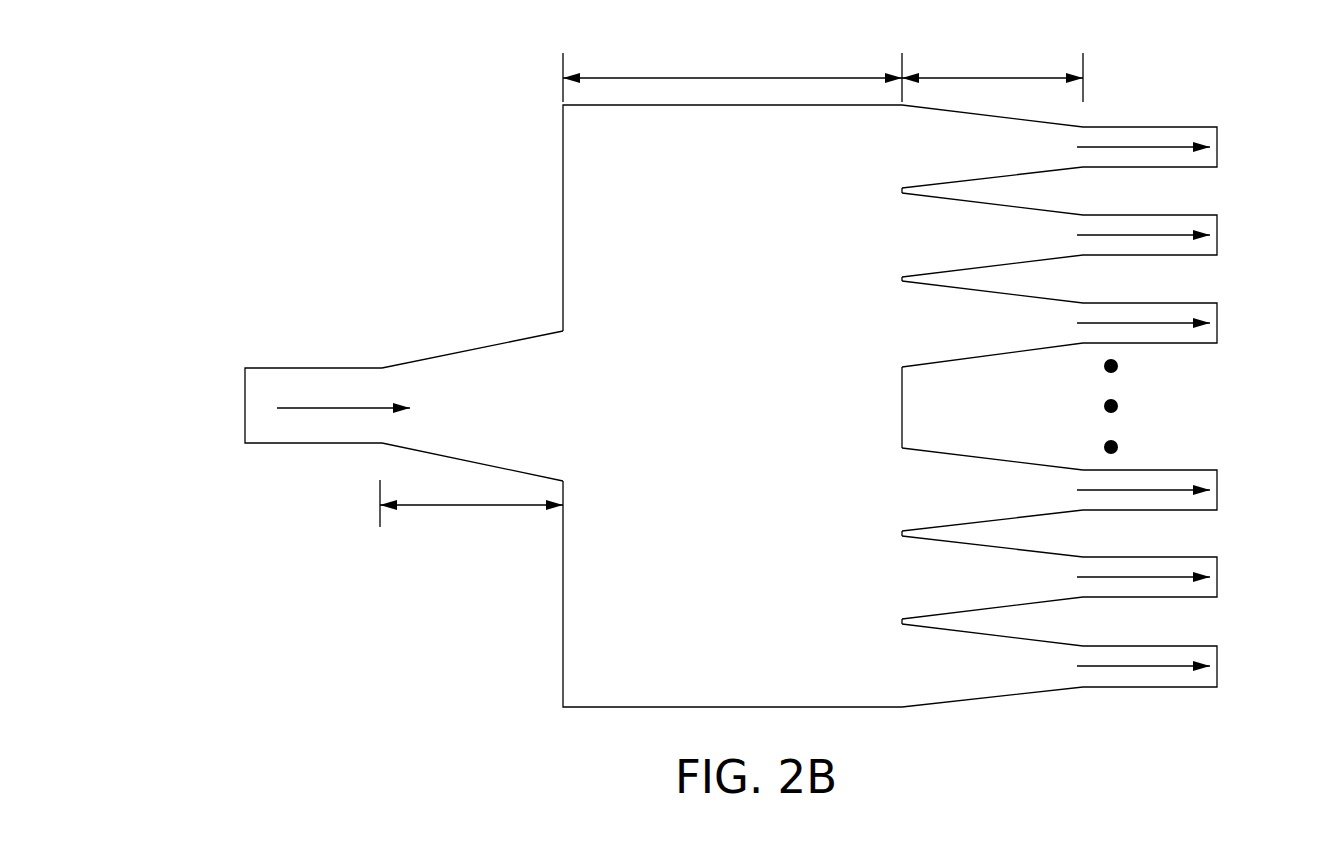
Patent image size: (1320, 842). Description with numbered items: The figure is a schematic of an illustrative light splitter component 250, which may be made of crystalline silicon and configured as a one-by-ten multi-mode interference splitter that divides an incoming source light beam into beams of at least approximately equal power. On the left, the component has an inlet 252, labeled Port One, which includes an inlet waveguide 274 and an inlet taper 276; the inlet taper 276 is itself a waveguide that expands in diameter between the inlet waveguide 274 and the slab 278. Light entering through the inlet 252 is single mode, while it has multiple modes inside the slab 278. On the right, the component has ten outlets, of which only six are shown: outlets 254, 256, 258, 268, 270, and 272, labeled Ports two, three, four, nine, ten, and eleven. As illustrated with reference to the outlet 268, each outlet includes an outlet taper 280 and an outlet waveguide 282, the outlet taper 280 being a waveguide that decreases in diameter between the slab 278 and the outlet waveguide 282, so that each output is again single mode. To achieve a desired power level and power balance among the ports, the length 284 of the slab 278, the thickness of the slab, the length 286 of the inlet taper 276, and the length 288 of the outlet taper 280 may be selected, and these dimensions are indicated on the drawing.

The light splitter component 250 is at (212, 95).
The inlet 252 is at (213, 433).
The outlet 254 is at (1244, 132).
The outlet 256 is at (1244, 220).
The outlet 258 is at (1244, 309).
The outlet 268 is at (1244, 473).
The outlet 270 is at (1244, 562).
The outlet 272 is at (1244, 652).
The inlet waveguide 274 is at (313, 367).
The inlet taper 276 is at (471, 326).
The slab 278 is at (752, 396).
The outlet taper 280 is at (1015, 458).
The outlet waveguide 282 is at (1185, 468).
The length of the slab 284 is at (733, 76).
The length of the inlet taper 286 is at (471, 508).
The length of the outlet taper 288 is at (993, 76).